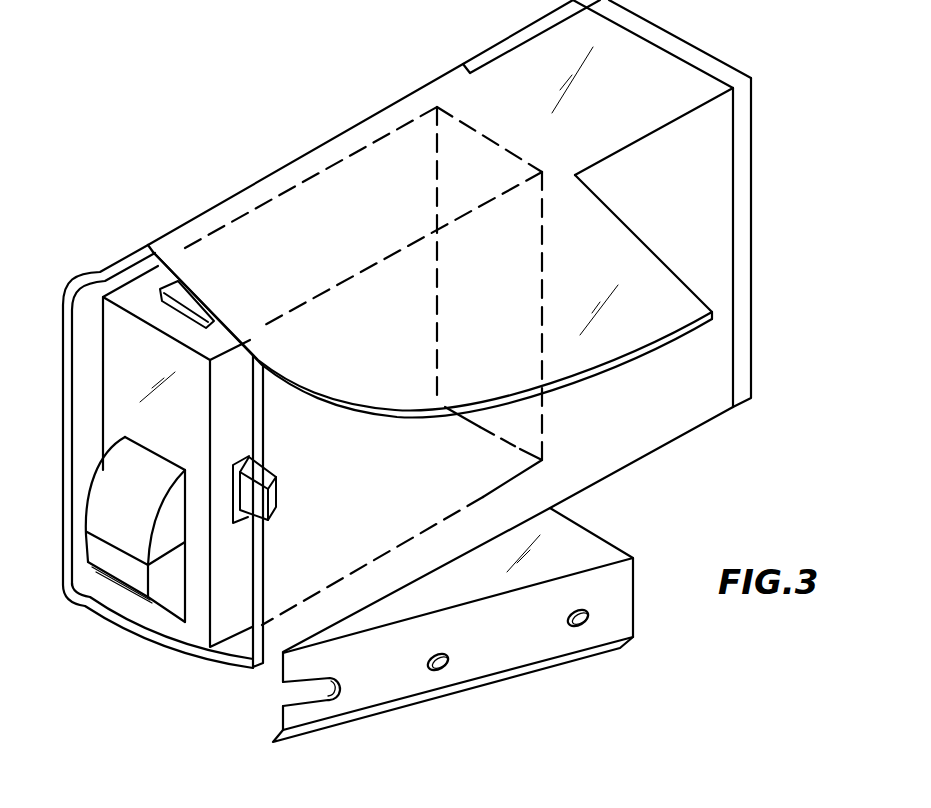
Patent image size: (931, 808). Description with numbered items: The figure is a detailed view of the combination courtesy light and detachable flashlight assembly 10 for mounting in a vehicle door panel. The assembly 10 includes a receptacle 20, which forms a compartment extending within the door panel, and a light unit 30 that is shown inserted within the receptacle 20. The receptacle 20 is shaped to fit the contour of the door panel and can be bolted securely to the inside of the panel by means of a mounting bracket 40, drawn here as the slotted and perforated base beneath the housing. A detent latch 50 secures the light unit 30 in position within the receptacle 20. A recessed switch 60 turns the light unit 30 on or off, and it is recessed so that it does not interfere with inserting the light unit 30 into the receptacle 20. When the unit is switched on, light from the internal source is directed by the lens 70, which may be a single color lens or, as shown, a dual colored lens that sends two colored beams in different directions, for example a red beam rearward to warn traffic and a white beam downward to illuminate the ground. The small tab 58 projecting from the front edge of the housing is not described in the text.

The assembly 10 is at (300, 98).
The receptacle 20 is at (658, 453).
The light unit 30 is at (98, 400).
The mounting bracket 40 is at (633, 593).
The detent latch 50 is at (240, 520).
The tab 58 is at (283, 505).
The recessed switch 60 is at (167, 307).
The lens 70 is at (120, 572).